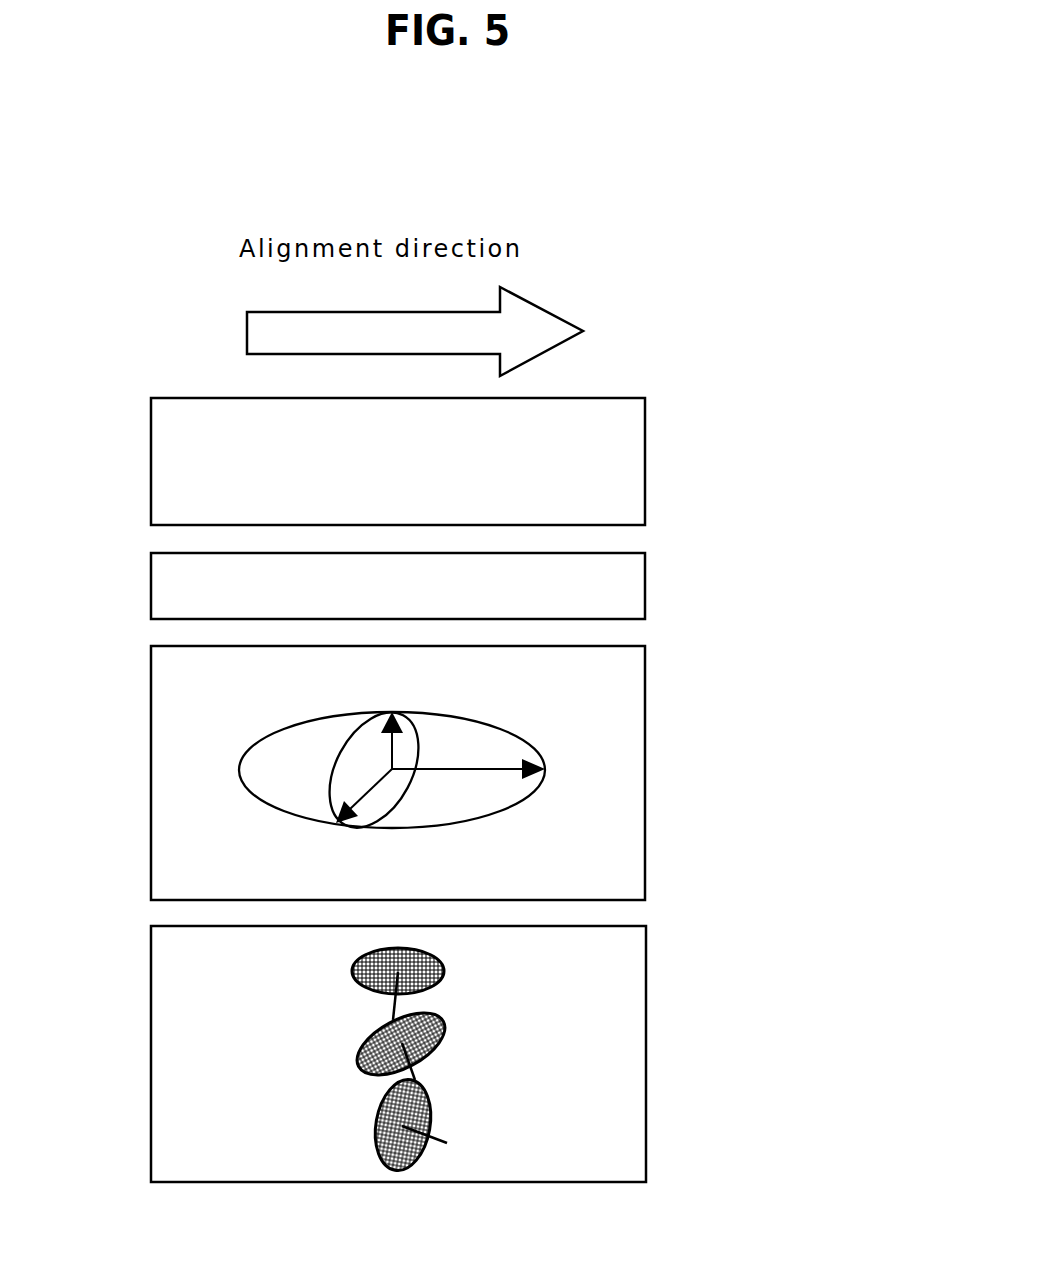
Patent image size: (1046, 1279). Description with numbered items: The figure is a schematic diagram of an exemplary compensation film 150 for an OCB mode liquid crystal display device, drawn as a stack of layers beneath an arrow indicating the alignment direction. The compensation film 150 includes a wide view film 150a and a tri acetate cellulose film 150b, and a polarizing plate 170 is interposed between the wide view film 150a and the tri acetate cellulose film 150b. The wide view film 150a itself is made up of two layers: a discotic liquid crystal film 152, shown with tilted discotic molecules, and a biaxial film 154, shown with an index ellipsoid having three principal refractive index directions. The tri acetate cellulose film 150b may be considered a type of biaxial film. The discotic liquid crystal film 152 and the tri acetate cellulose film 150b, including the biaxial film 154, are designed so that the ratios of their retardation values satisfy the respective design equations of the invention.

The compensation film 150 is at (495, 790).
The wide view (WV) film 150a is at (499, 914).
The tri acetate cellulose (TAC) film 150b is at (645, 493).
The discotic liquid crystal film 152 is at (453, 1054).
The biaxial film 154 is at (645, 770).
The polarizing plate 170 is at (151, 585).